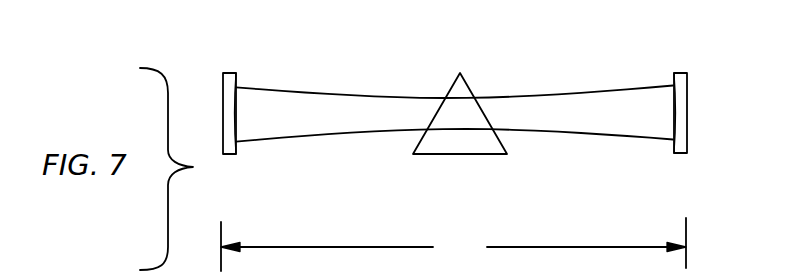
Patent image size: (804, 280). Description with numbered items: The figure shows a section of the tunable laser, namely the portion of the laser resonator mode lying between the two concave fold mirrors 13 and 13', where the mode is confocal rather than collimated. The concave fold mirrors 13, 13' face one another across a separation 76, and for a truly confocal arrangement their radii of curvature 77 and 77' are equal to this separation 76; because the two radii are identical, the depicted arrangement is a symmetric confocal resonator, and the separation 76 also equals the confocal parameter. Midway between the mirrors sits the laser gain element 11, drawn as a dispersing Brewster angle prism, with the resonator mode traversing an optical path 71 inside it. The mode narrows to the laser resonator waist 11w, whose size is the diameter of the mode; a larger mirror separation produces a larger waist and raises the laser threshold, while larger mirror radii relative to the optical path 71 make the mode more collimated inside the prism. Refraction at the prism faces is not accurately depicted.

The laser gain element 11 is at (468, 87).
The laser resonator waist 11w is at (465, 122).
The concave fold mirror 13 is at (249, 93).
The concave fold mirror 13' is at (698, 92).
The optical path 71 is at (435, 130).
The separation 76 is at (453, 244).
The radius of curvature 77 is at (454, 136).
The radius of curvature 77' is at (645, 165).